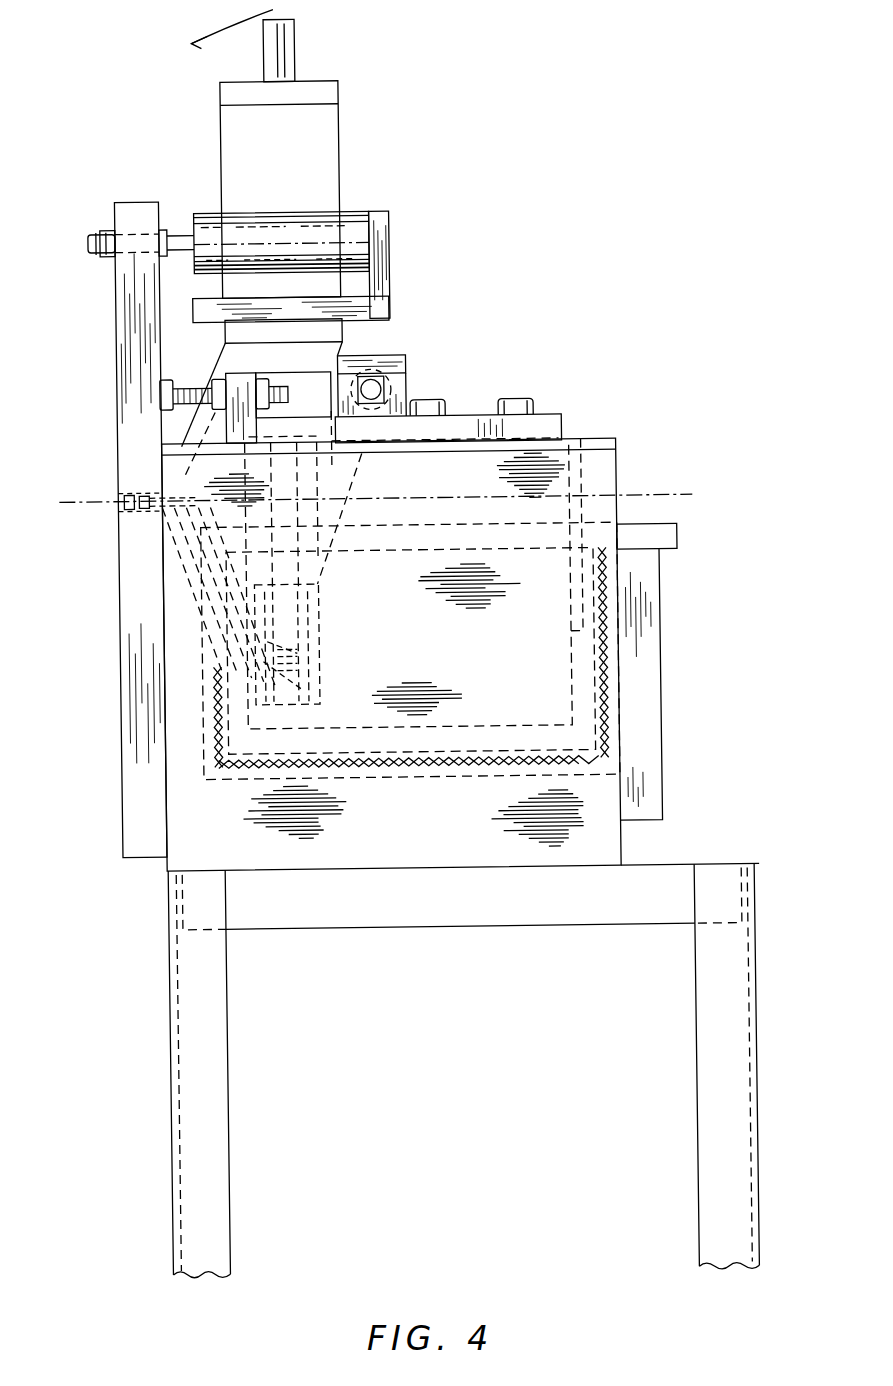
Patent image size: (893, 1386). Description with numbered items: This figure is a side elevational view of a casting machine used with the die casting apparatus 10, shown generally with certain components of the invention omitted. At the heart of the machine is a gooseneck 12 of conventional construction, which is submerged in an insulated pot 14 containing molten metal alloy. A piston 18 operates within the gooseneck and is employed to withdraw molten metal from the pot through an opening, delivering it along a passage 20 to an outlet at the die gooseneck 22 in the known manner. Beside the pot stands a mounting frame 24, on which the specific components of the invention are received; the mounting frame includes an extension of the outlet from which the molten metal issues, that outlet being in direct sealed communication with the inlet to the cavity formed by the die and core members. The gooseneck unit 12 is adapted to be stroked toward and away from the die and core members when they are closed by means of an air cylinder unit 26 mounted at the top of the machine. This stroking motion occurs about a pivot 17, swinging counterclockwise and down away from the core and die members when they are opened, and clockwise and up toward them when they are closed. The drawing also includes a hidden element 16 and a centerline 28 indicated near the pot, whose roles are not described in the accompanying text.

The apparatus for die casting shaped articles 10 is at (462, 343).
The gooseneck 12 is at (322, 607).
The insulated pot 14 is at (570, 669).
The mold cavity insert 16 is at (301, 626).
The pivot 17 is at (378, 379).
The piston 18 is at (281, 666).
The passage 20 is at (257, 667).
The die gooseneck 22 is at (120, 516).
The mounting frame 24 is at (122, 331).
The air cylinder unit 26 is at (356, 220).
The pivot axis 28 is at (665, 498).